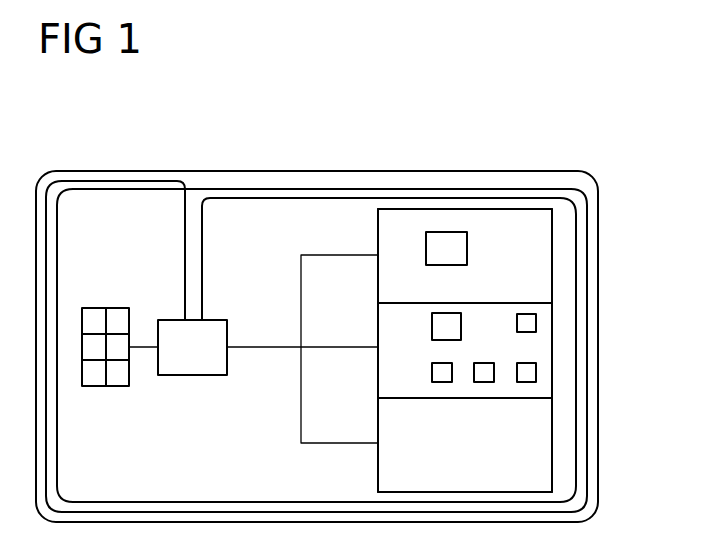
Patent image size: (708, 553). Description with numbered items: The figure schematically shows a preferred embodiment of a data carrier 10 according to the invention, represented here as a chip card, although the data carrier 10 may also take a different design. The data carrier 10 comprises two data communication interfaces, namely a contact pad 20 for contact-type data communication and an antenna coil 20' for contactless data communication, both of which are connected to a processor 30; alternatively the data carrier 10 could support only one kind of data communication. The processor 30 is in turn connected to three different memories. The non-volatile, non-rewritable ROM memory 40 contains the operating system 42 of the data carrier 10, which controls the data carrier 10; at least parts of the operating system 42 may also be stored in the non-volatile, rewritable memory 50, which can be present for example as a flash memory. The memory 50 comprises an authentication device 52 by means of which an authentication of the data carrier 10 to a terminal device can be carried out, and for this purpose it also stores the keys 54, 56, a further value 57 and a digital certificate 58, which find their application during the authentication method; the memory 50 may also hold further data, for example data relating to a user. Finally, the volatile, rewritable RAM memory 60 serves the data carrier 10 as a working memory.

The data carrier 10 is at (598, 278).
The contact pad 20 is at (106, 317).
The antenna coil 20' is at (316, 315).
The processor 30 is at (193, 375).
The ROM memory 40 is at (537, 253).
The operating system 42 is at (467, 250).
The non-volatile rewritable memory 50 is at (537, 353).
The authentication device 52 is at (461, 330).
The key 54 is at (442, 382).
The key 56 is at (484, 382).
The further value 57 is at (536, 322).
The digital certificate 58 is at (526, 382).
The RAM memory 60 is at (537, 448).